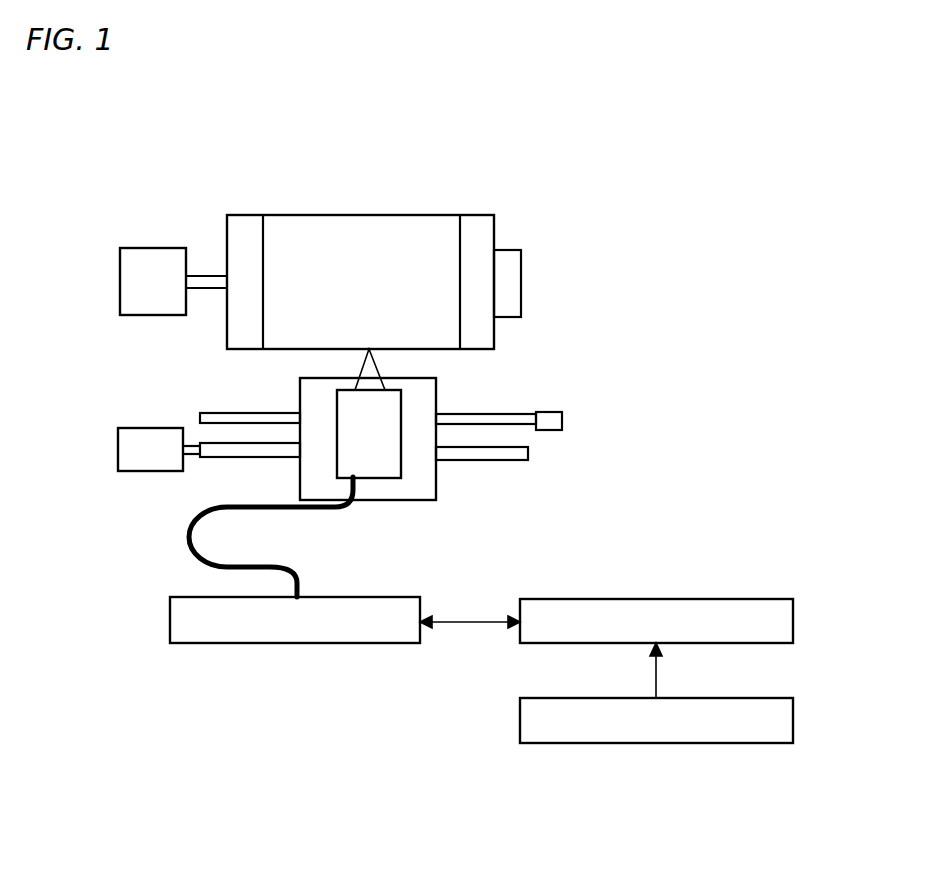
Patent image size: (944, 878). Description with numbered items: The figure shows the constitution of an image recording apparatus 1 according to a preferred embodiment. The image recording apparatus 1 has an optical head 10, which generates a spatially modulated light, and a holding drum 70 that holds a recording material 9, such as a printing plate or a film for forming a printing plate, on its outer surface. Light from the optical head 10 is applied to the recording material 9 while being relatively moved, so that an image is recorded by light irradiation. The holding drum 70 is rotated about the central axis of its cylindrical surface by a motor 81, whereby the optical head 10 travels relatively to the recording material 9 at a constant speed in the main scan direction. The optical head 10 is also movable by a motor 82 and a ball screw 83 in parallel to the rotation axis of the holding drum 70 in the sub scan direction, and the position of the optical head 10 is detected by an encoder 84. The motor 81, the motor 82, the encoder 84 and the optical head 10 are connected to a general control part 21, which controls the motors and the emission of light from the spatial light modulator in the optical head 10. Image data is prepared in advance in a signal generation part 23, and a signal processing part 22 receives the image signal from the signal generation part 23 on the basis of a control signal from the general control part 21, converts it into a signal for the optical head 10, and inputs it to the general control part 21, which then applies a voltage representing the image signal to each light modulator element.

The image recording apparatus 1 is at (116, 185).
The recording material 9 is at (397, 215).
The holding drum 70 is at (475, 215).
The motor 81 is at (138, 249).
The motor 82 is at (132, 428).
The ball screw 83 is at (243, 458).
The encoder 84 is at (548, 430).
The optical head 10 is at (380, 500).
The general control part 21 is at (240, 643).
The signal processing part 22 is at (793, 622).
The signal generation part 23 is at (793, 722).